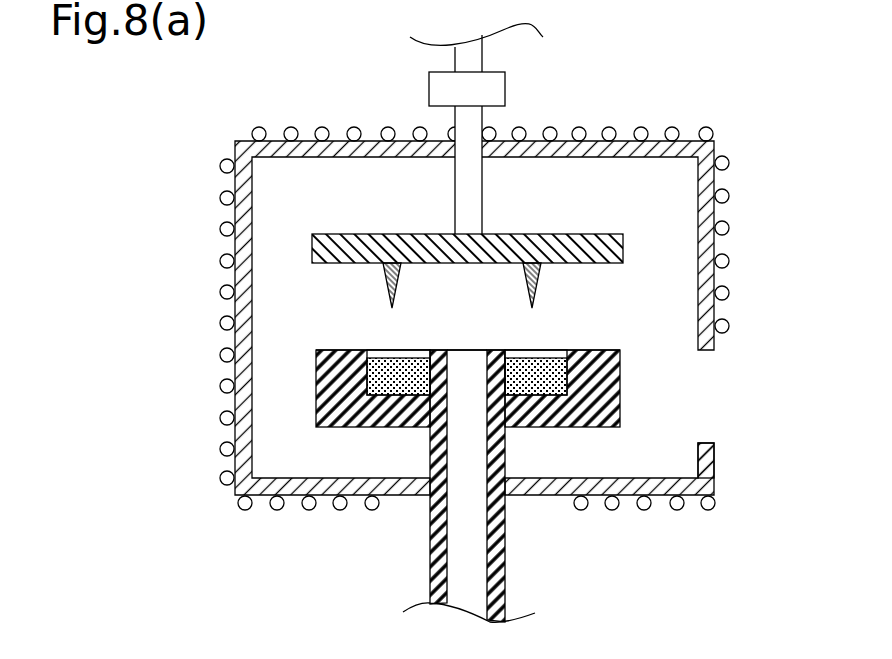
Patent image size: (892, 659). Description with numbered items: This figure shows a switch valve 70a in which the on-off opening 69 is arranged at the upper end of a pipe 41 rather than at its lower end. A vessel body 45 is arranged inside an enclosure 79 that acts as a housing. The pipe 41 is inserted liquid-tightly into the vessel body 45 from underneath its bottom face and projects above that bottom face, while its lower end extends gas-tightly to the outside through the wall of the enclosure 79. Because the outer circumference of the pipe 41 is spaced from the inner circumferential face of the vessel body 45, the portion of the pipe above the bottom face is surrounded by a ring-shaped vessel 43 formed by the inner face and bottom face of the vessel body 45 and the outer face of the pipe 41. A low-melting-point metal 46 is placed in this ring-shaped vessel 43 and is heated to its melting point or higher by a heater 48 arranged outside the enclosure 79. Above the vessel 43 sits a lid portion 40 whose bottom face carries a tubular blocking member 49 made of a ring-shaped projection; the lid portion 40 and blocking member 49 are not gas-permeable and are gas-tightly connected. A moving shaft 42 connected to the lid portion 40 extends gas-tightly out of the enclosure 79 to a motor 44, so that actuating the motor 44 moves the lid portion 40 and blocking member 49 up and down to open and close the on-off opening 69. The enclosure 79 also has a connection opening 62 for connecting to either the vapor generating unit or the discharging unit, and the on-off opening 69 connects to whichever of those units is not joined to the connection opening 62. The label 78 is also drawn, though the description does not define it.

The switch valve 70a is at (170, 129).
The lid portion 40 is at (623, 253).
The pipe 41 is at (505, 538).
The moving shaft 42 is at (475, 200).
The ring-shaped vessel 43 is at (560, 376).
The motor 44 is at (497, 100).
The vessel body 45 is at (593, 353).
The low-melting-point metal 46 is at (390, 365).
The heater 48 is at (608, 130).
The blocking member 49 is at (383, 282).
The connection opening 62 is at (692, 393).
The on-off opening 69 is at (463, 362).
The exhaust port 78 is at (717, 418).
The enclosure 79 is at (685, 137).